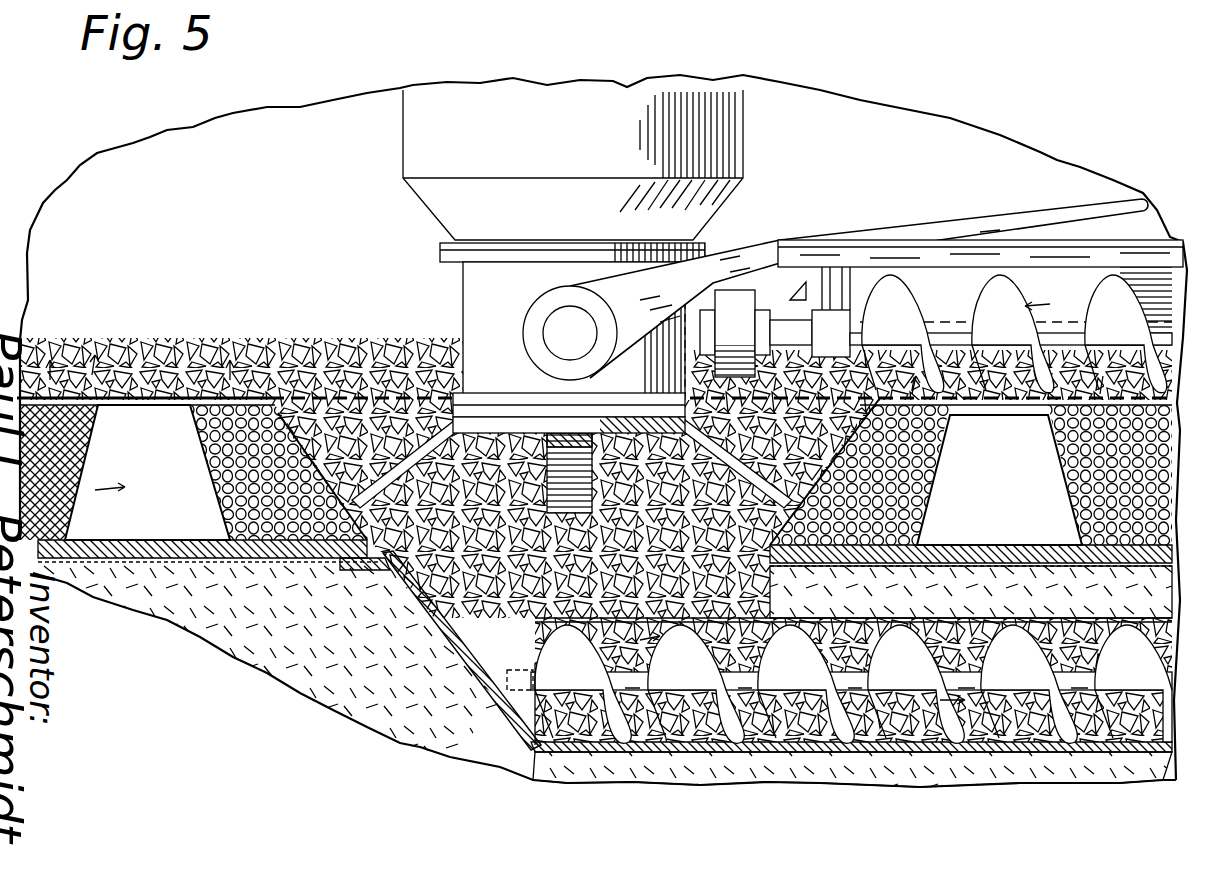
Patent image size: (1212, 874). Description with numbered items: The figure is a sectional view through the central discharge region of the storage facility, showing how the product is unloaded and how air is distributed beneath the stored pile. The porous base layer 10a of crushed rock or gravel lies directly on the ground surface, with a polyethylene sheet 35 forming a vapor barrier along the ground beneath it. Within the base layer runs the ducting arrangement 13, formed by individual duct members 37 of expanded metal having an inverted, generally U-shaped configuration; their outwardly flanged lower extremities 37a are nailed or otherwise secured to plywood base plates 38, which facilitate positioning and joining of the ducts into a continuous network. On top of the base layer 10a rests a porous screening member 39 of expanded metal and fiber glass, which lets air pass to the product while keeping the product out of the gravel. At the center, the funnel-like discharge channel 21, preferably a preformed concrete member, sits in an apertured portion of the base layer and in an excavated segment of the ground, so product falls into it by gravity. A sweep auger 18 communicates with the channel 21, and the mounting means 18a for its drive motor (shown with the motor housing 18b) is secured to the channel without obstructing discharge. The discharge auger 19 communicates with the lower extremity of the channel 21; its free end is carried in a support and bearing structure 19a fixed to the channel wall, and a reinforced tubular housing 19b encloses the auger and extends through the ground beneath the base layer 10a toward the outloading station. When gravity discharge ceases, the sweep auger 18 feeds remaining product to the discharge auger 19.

The base layer 10a is at (609, 431).
The ducting arrangement 13 is at (188, 413).
The sweep auger 18 is at (960, 292).
The mounting means 18a is at (419, 650).
The motor housing 18b is at (478, 318).
The discharge auger 19 is at (770, 774).
The support and bearing structure 19a is at (440, 745).
The tubular housing 19b is at (946, 798).
The discharge channel 21 is at (416, 628).
The polyethylene sheet 35 is at (132, 570).
The duct members 37 is at (226, 466).
The outwardly flanged lower extremities 37a is at (330, 577).
The base plates 38 is at (140, 548).
The screening member 39 is at (594, 373).